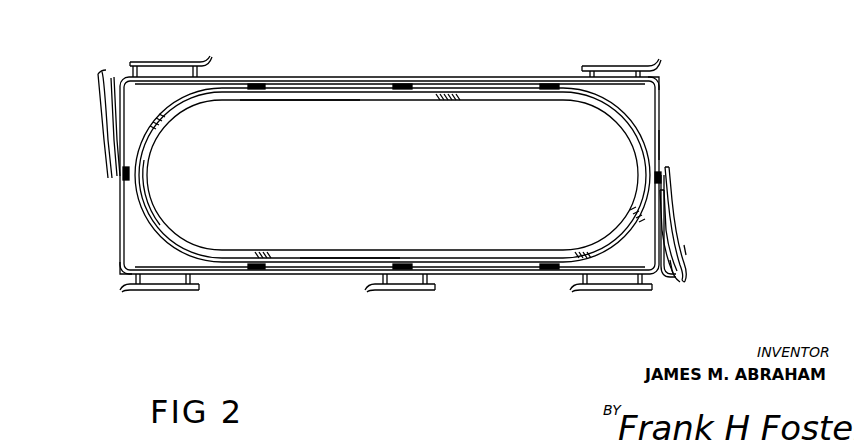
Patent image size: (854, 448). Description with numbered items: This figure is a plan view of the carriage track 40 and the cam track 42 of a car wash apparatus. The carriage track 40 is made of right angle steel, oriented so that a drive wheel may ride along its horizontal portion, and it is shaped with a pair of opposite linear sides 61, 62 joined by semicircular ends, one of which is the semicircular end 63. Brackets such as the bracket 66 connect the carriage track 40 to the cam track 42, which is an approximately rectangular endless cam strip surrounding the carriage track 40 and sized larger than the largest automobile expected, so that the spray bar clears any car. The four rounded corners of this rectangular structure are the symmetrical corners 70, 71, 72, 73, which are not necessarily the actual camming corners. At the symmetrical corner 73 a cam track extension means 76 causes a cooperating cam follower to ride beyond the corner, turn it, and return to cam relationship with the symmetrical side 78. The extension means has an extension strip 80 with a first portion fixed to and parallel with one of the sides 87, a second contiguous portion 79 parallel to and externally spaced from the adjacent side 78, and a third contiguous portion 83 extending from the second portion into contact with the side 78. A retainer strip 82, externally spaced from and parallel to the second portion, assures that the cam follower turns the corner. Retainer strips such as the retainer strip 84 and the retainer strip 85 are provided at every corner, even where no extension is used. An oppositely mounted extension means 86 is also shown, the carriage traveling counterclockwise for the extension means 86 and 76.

The carriage track 40 is at (633, 128).
The cam track 42 is at (457, 84).
The linear side 61 is at (302, 99).
The linear side 62 is at (347, 257).
The semicircular end 63 is at (144, 197).
The bracket 66 is at (252, 83).
The symmetrical corner 70 is at (121, 77).
The symmetrical corner 71 is at (659, 80).
The symmetrical corner 72 is at (120, 272).
The symmetrical corner 73 is at (657, 280).
The cam track extension means 76 is at (690, 249).
The symmetrical side 78 is at (661, 146).
The second contiguous portion 79 is at (672, 257).
The extension strip 80 is at (680, 233).
The retainer strip 82 is at (686, 268).
The third contiguous portion 83 is at (674, 222).
The retainer strip 84 is at (620, 66).
The retainer strip 85 is at (168, 291).
The extension means 86 is at (95, 105).
The side 87 is at (495, 281).